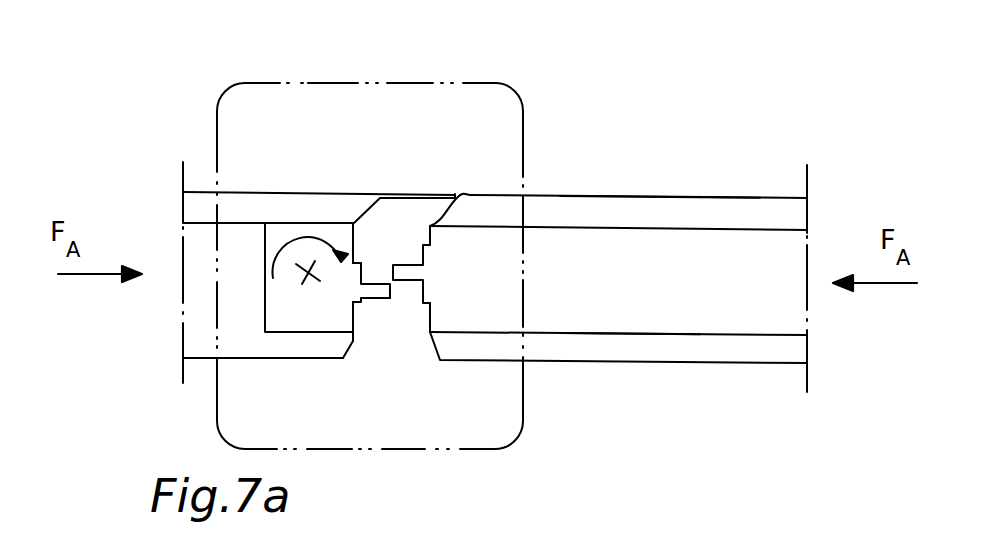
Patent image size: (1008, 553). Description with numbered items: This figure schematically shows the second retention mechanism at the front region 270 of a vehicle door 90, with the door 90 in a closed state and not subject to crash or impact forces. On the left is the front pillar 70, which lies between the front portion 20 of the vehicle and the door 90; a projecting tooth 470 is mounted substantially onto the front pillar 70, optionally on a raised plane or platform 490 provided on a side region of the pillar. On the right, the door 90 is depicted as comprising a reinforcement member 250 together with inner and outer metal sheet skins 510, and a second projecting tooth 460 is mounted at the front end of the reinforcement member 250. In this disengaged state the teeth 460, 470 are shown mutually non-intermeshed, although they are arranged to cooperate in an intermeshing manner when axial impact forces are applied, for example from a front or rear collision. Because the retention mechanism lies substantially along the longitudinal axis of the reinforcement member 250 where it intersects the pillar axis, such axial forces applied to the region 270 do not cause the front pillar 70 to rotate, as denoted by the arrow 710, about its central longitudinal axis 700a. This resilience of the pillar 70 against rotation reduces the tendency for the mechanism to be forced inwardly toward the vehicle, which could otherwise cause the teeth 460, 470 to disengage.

The front portion 20 is at (198, 310).
The front pillar 70 is at (275, 313).
The door 90 is at (717, 167).
The reinforcement member 250 is at (732, 317).
The front region 270 is at (482, 87).
The projecting tooth 460 is at (405, 272).
The projecting tooth 470 is at (383, 293).
The raised plane or platform 490 is at (357, 303).
The inner and outer metal sheet skins 510 is at (592, 212).
The central longitudinal axis 700a is at (314, 276).
The arrow 710 is at (297, 236).